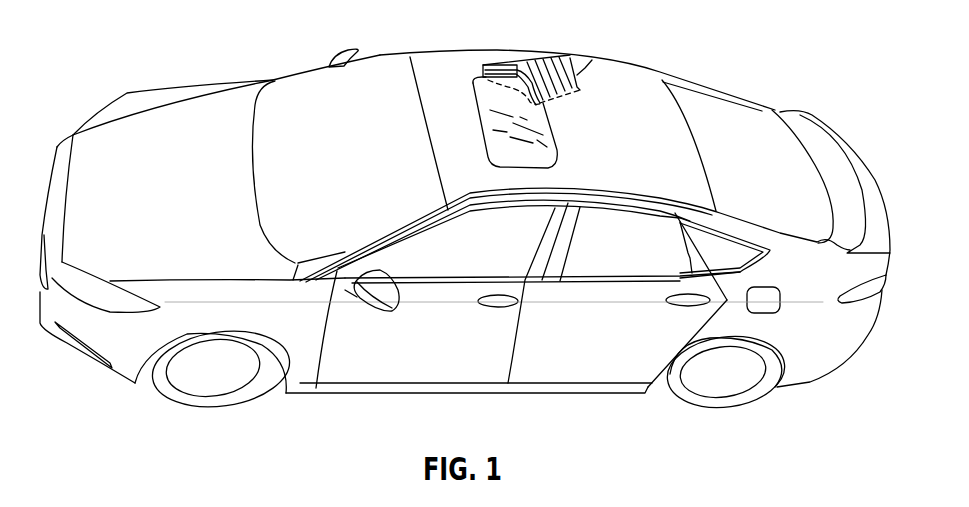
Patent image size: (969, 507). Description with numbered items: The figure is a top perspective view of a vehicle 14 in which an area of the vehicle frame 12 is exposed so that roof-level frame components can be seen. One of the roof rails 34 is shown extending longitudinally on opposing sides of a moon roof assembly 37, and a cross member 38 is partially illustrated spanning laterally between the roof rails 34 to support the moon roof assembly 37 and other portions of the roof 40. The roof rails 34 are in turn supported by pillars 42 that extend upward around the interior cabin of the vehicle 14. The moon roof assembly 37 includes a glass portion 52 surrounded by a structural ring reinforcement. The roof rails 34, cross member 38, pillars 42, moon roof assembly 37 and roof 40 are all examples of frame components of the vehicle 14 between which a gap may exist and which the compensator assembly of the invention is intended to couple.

The vehicle frame 12 is at (580, 66).
The vehicle 14 is at (465, 232).
The roof rail 34 is at (503, 56).
The moon roof assembly 37 is at (469, 67).
The cross member 38 is at (552, 72).
The roof 40 is at (628, 110).
The pillar 42 is at (360, 231).
The glass portion 52 is at (487, 118).